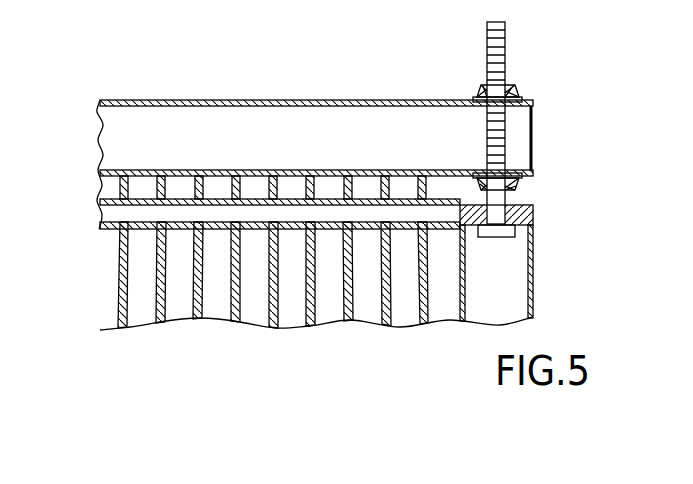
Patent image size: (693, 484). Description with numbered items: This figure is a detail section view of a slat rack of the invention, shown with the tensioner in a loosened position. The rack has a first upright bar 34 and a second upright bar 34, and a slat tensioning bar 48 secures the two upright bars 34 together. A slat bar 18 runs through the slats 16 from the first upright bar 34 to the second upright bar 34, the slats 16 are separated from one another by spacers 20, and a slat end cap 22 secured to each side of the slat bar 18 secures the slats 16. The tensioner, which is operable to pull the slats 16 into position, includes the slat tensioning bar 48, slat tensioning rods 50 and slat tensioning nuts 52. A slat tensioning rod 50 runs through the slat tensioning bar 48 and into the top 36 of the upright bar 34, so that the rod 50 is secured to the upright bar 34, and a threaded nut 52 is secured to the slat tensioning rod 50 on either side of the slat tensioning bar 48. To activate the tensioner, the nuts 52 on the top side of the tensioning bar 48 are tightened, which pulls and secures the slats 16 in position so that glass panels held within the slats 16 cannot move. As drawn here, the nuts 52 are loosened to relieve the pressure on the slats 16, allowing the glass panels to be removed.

The slat tensioning bar 48 is at (328, 101).
The slat tensioning rod 50 is at (495, 64).
The slat tensioning nut 52 is at (510, 85).
The slat bar 18 is at (217, 199).
The spacer 20 is at (290, 199).
The slat 16 is at (379, 188).
The slat end cap 22 is at (430, 189).
The top of upright bar 36 is at (535, 207).
The upright bar 34 is at (533, 278).